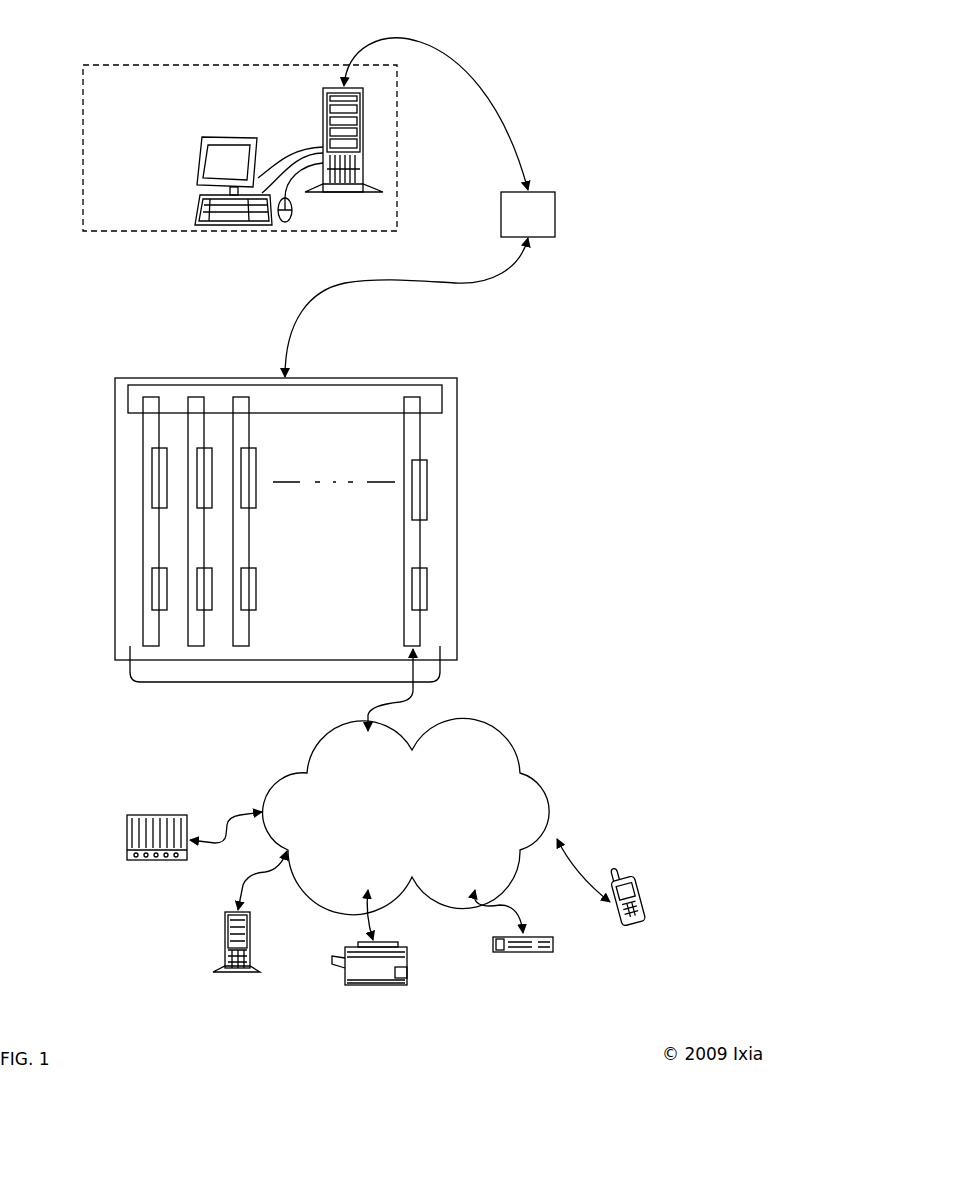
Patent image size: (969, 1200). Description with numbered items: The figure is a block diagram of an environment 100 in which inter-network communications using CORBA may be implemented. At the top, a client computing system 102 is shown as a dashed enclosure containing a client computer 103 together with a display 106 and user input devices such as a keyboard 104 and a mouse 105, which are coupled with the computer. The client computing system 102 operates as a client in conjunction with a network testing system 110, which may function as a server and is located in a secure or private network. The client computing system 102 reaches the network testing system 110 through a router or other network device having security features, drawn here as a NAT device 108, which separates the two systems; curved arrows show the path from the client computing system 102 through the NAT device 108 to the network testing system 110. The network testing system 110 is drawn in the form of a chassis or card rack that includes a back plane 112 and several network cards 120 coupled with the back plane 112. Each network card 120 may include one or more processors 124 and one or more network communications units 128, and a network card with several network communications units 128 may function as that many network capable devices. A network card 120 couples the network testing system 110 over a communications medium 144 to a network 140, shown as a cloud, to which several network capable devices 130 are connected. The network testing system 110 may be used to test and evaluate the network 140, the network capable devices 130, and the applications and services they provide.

The environment 100 is at (700, 42).
The client computing system 102 is at (306, 65).
The client computer 103 is at (323, 108).
The keyboard 104 is at (197, 208).
The mouse 105 is at (292, 208).
The display 106 is at (198, 163).
The NAT device 108 is at (600, 218).
The network testing system 110 is at (338, 378).
The back plane 112 is at (443, 398).
The network cards 120 is at (287, 683).
The processors 124 is at (428, 490).
The network communications units 128 is at (428, 588).
The network capable devices 130 is at (394, 924).
The network 140 is at (406, 816).
The communications medium 144 is at (407, 694).